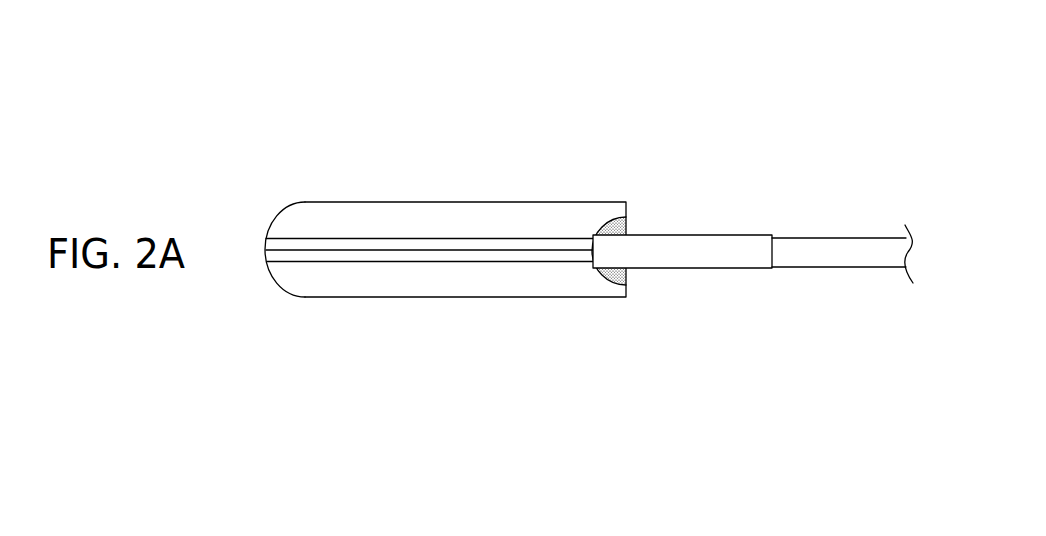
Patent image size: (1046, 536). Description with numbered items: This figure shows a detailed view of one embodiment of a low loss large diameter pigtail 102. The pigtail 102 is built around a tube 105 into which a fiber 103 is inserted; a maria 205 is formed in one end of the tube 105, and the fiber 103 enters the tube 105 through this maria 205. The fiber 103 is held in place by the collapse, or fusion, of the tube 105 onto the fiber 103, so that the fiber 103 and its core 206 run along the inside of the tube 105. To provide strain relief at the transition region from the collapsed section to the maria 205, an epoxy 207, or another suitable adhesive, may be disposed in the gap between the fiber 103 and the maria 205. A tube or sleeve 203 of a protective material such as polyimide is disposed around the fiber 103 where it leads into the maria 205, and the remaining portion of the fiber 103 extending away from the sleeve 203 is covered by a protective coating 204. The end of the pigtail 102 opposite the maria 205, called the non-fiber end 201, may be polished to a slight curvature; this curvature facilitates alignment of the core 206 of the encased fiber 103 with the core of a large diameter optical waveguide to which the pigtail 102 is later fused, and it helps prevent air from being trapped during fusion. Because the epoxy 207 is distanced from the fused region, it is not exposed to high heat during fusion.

The pigtail 102 is at (244, 80).
The tube 105 is at (371, 215).
The non-fiber end 201 is at (278, 217).
The core 206 is at (473, 250).
The fiber 103 is at (503, 262).
The epoxy 207 is at (613, 228).
The sleeve 203 is at (722, 243).
The protective coating 204 is at (863, 253).
The maria 205 is at (644, 278).